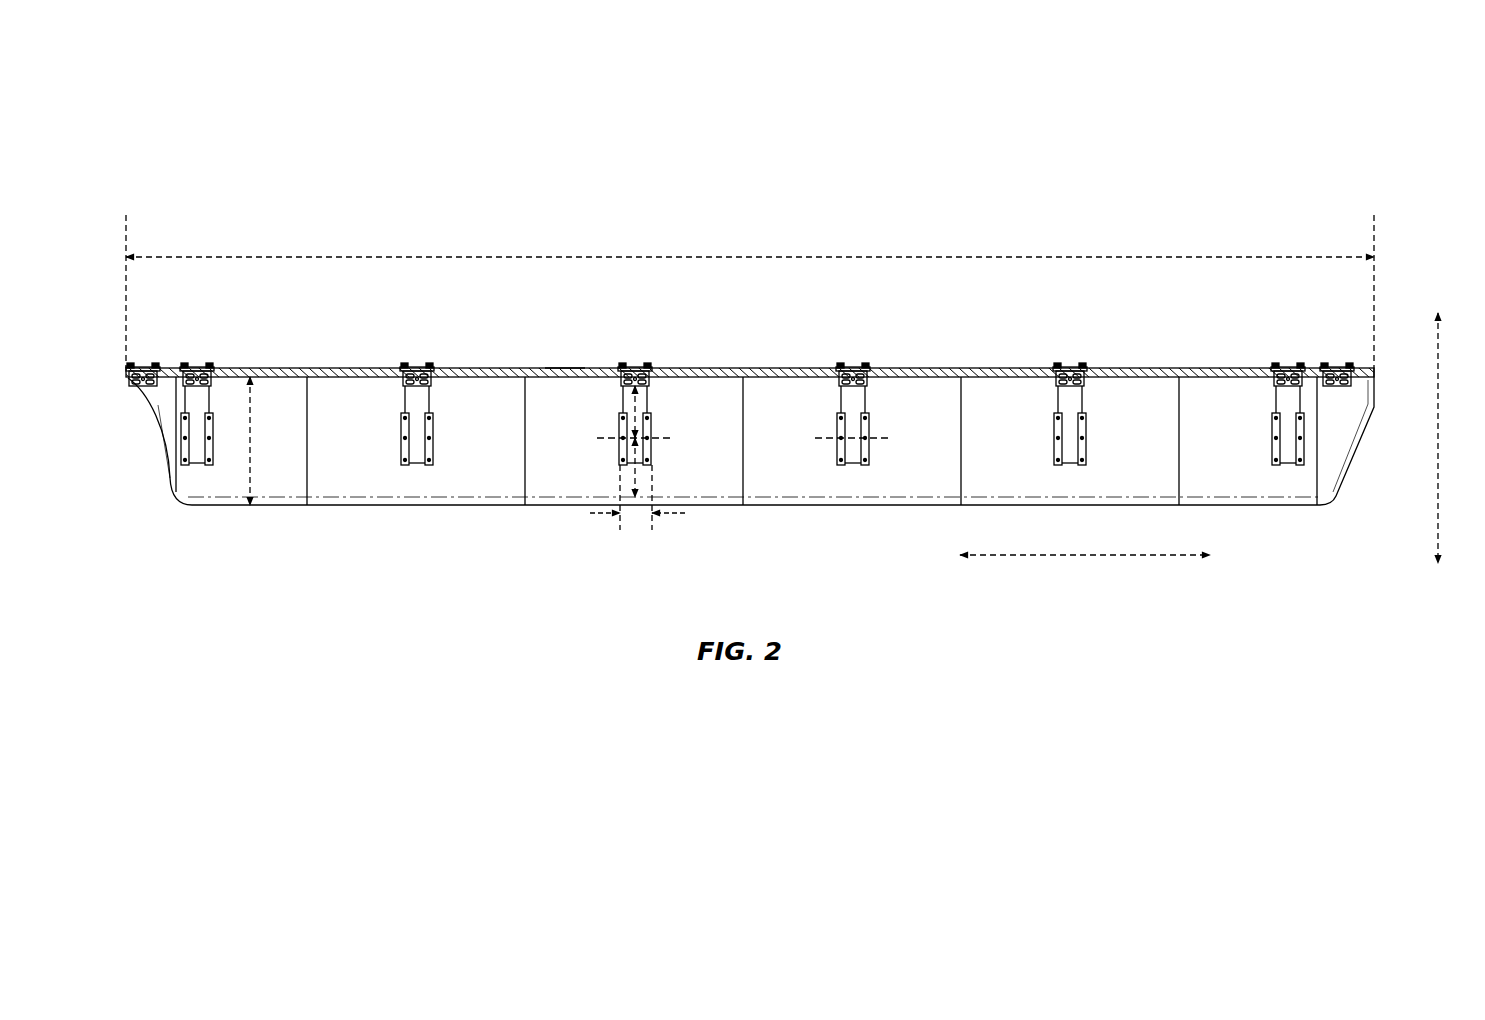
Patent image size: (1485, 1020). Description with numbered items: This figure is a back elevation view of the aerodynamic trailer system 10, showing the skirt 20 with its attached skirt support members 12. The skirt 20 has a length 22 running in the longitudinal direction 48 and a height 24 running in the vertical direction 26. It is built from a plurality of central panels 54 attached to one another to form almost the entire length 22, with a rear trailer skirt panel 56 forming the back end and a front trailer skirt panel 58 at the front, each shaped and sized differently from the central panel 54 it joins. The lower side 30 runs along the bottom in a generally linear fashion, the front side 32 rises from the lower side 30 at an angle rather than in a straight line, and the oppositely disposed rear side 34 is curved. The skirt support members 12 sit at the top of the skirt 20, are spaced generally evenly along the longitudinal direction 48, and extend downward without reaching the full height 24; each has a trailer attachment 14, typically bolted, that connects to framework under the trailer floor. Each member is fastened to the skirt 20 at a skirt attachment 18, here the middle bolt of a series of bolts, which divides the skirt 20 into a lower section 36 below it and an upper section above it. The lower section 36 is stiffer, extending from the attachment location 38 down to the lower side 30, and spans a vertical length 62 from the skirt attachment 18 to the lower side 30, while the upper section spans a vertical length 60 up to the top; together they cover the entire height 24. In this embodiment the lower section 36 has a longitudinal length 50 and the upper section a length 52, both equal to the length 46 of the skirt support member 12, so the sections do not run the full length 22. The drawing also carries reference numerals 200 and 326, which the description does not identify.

The aerodynamic trailer system 10 is at (1324, 126).
The skirt support member 12 is at (863, 403).
The trailer attachment 14 is at (851, 368).
The skirt attachment 18 is at (841, 436).
The skirt 20 is at (481, 370).
The deck top surface 200 is at (563, 365).
The length 22 is at (746, 256).
The height 24 is at (256, 440).
The vertical direction 26 is at (1438, 435).
The lower side 30 is at (526, 511).
The front side 32 is at (1346, 478).
The rear side 34 is at (161, 472).
The lower section 36 is at (801, 462).
The attachment location 38 is at (1056, 425).
The length of the skirt support member 46 is at (713, 522).
The longitudinal direction 48 is at (1085, 555).
The length of the lower section 50 is at (713, 522).
The length of the upper section 52 is at (690, 513).
The central panel 54 is at (589, 384).
The rear trailer skirt panel 56 is at (166, 430).
The front trailer skirt panel 58 is at (1356, 425).
The length of the upper section in the vertical direction 60 is at (641, 410).
The length of the lower section in the vertical direction 62 is at (646, 472).
The panel section 326 is at (781, 396).